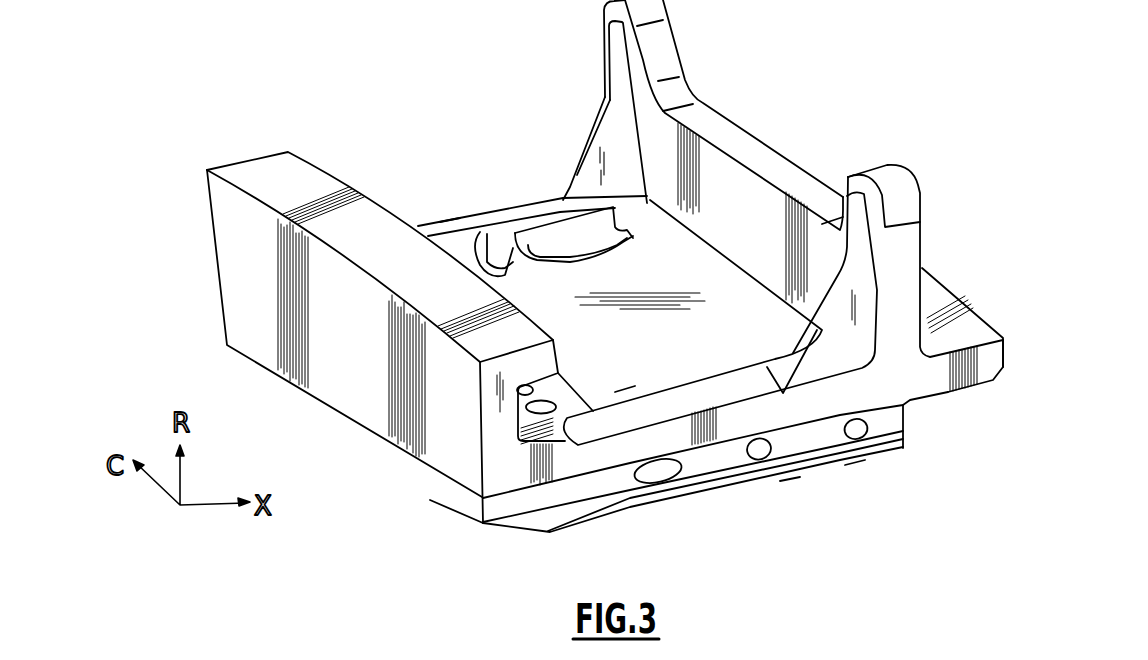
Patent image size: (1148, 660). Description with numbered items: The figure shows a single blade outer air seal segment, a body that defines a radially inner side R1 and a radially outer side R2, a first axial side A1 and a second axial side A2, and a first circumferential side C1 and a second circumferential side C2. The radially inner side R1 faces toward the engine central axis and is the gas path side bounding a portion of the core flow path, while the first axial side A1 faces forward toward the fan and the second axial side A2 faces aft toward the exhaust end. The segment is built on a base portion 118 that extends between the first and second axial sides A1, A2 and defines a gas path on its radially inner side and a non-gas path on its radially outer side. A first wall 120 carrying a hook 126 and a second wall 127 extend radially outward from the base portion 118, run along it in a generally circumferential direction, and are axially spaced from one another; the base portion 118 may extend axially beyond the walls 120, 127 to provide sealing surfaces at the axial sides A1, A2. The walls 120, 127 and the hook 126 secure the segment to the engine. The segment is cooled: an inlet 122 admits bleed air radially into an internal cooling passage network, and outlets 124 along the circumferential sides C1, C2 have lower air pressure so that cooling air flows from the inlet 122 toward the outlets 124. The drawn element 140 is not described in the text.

The base portion 118 is at (620, 280).
The first wall 120 is at (507, 423).
The inlet 122 is at (553, 410).
The outlets 124 is at (663, 478).
The hook 126 is at (275, 166).
The second wall 127 is at (763, 212).
The mounting flange 140 is at (933, 383).
The first axial side A1 is at (455, 500).
The second axial side A2 is at (1003, 360).
The first circumferential side C1 is at (790, 478).
The second circumferential side C2 is at (452, 220).
The radially inner side R1 is at (855, 463).
The radially outer side R2 is at (623, 385).